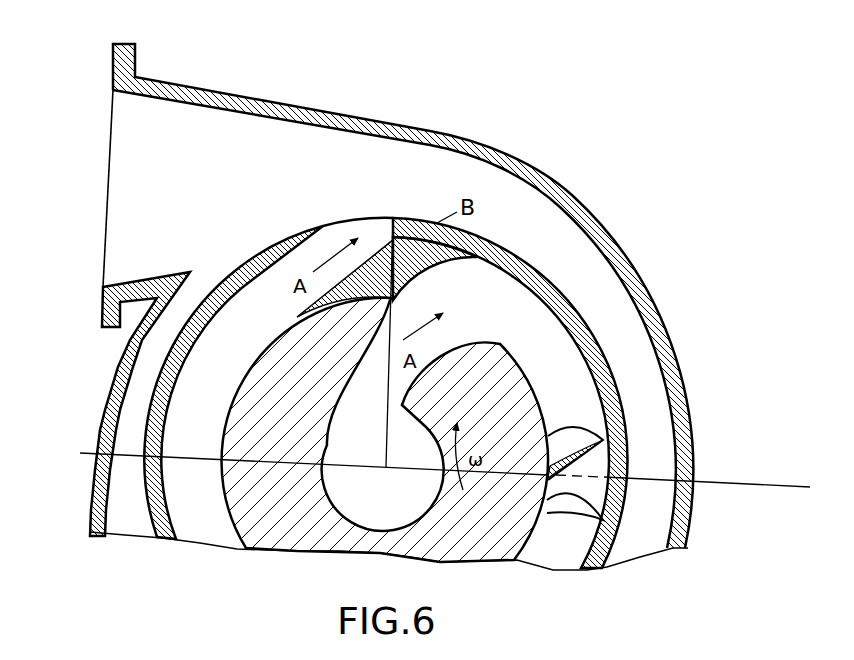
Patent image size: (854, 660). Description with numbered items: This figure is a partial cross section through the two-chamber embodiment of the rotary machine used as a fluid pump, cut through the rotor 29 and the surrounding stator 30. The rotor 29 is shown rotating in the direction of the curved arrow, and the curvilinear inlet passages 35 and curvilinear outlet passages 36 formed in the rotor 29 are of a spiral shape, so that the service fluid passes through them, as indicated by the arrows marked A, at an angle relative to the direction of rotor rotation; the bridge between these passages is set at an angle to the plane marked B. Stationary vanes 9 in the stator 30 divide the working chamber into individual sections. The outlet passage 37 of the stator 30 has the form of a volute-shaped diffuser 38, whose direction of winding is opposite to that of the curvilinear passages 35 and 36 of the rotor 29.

The stationary vanes 9 is at (573, 437).
The rotor 29 is at (293, 543).
The stator 30 is at (686, 388).
The curvilinear inlet passages 35 is at (402, 330).
The curvilinear outlet passages 36 is at (373, 230).
The outlet passage of the stator 37 is at (122, 165).
The volute-shaped diffuser 38 is at (253, 100).